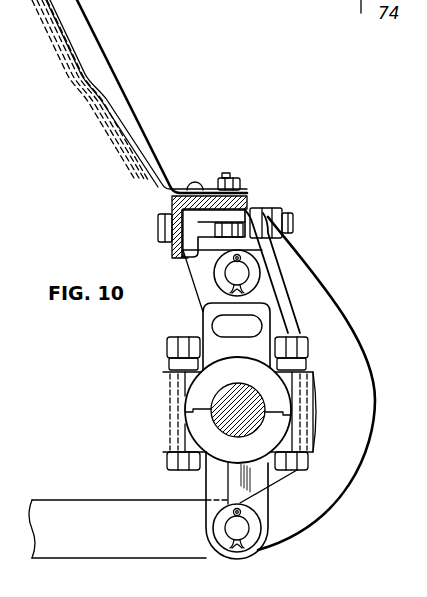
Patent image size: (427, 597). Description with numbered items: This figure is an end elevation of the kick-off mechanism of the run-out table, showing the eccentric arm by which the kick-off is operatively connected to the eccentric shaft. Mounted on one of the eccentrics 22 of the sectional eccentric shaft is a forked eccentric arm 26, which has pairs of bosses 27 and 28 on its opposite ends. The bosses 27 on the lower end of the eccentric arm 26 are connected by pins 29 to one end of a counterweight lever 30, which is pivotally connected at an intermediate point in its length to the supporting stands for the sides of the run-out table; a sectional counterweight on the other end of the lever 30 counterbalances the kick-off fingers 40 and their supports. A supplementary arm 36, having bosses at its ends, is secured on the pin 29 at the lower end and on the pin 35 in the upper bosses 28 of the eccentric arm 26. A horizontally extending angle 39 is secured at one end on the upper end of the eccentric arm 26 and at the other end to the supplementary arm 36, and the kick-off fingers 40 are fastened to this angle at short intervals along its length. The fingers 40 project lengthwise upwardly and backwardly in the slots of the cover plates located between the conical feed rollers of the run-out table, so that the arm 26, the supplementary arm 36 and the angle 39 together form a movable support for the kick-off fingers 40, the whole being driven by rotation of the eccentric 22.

The kick-off fingers 40 is at (95, 48).
The angle supports 39 is at (248, 202).
The bosses 28 is at (253, 282).
The pin 35 is at (242, 270).
The forked eccentric arm 26 is at (265, 318).
The supplementary arms 36 is at (338, 337).
The eccentrics 22 is at (260, 402).
The bosses 27 is at (257, 550).
The pins 29 is at (240, 530).
The counterweight levers 30 is at (147, 493).